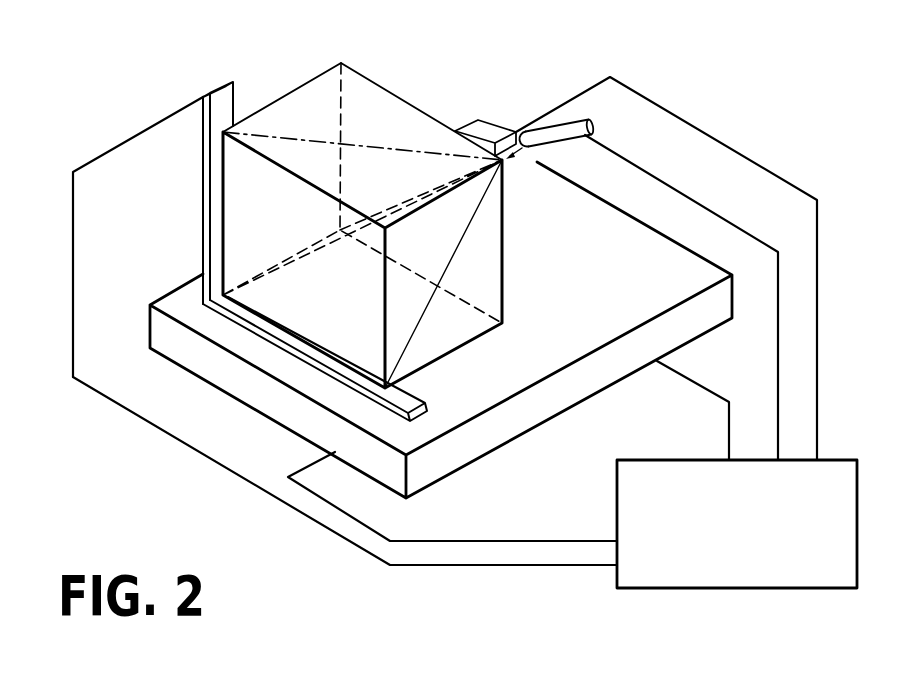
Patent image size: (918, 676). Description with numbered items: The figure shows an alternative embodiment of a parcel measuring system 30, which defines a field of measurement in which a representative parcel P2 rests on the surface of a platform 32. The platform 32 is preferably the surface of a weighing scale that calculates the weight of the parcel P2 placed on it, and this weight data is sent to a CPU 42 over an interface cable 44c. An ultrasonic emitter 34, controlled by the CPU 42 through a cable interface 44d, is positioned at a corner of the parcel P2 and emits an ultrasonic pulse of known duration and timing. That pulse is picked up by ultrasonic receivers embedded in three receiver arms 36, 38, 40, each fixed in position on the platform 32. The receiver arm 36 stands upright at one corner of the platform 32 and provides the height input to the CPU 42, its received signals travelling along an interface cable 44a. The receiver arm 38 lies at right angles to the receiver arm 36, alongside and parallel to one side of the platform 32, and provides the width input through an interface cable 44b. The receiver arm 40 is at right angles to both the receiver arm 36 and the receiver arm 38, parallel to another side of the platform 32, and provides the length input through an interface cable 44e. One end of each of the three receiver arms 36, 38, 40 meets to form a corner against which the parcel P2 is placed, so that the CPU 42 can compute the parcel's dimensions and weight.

The system 30 is at (93, 141).
The platform 32 is at (567, 400).
The ultrasonic emitter 34 is at (572, 118).
The receiver arm 36 is at (218, 83).
The receiver arm 38 is at (287, 341).
The receiver arm 40 is at (504, 127).
The CPU 42 is at (782, 590).
The interface cable 44a is at (558, 568).
The interface cable 44b is at (553, 542).
The interface cable 44c is at (708, 392).
The cable interface 44d is at (732, 220).
The interface cable 44e is at (740, 148).
The parcel P2 is at (396, 98).